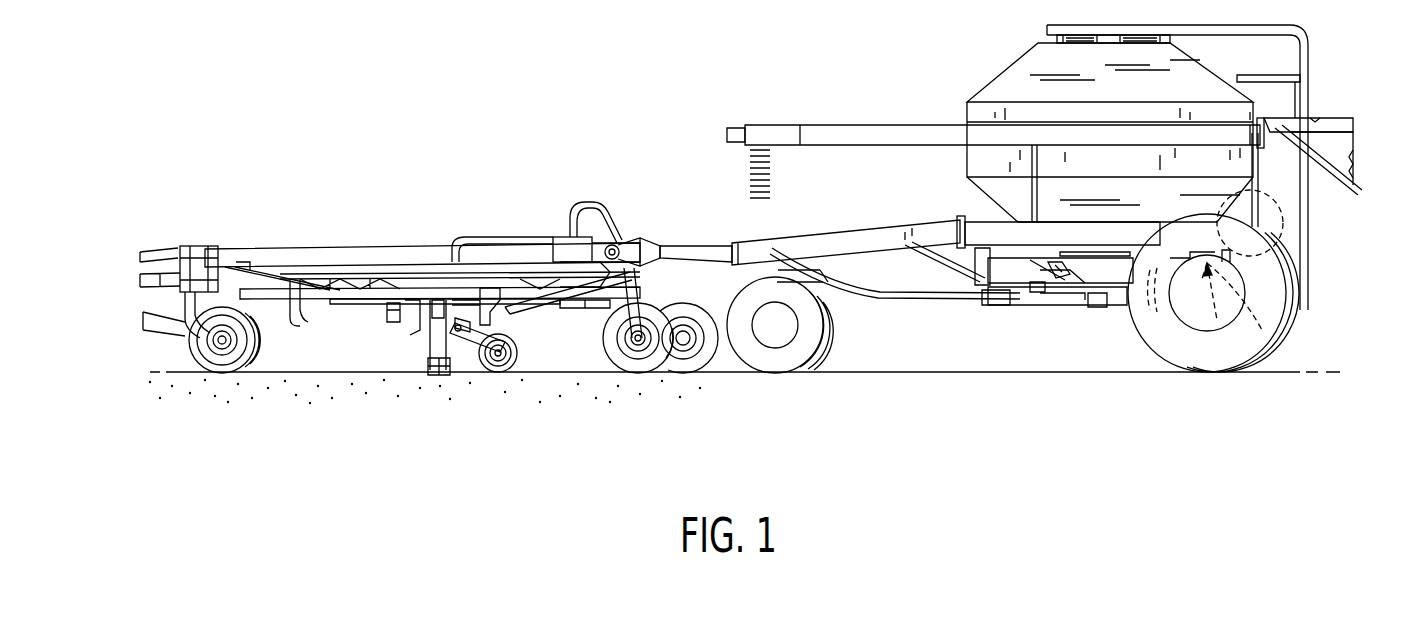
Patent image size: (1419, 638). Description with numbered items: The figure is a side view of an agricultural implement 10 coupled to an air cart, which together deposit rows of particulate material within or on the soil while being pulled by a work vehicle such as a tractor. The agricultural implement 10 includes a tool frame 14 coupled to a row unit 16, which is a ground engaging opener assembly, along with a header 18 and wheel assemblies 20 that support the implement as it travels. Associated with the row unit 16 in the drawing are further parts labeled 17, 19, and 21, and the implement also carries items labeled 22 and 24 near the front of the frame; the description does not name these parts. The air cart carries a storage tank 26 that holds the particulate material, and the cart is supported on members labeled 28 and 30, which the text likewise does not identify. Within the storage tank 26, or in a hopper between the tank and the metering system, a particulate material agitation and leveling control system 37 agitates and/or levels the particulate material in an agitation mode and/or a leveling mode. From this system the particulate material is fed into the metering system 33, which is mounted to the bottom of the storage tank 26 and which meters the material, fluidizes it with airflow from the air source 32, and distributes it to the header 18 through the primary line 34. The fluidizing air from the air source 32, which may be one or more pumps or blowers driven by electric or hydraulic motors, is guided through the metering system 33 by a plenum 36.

The agricultural implement 10 is at (410, 188).
The tool frame 14 is at (433, 250).
The row unit 16 is at (412, 347).
The ground engaging tool 17 is at (440, 373).
The header 18 is at (557, 232).
The gauge wheel 19 is at (515, 345).
The wheel assemblies 20 is at (220, 375).
The linkage 21 is at (465, 338).
The hydraulic hose 22 is at (503, 238).
The hitch coupling 24 is at (614, 243).
The storage tank 26 is at (1032, 63).
The tow beam 28 is at (845, 232).
The cart wheels 30 is at (843, 330).
The air source 32 is at (1270, 210).
The metering system 33 is at (1060, 288).
The primary line 34 is at (900, 305).
The plenum 36 is at (1278, 332).
The particulate material agitation and leveling control system 37 is at (1093, 255).